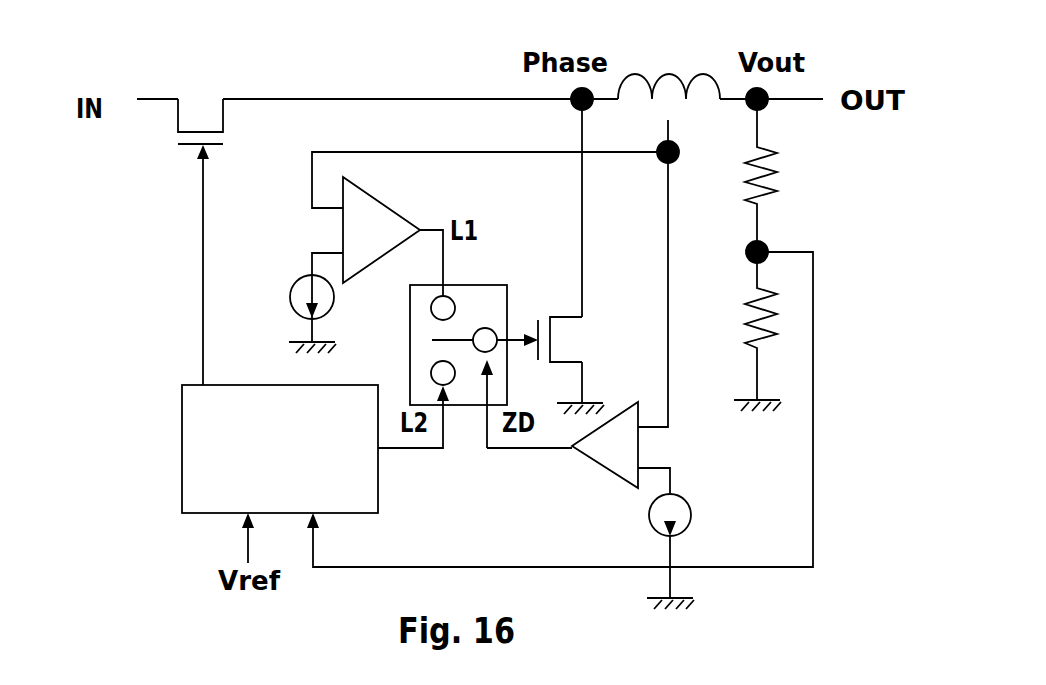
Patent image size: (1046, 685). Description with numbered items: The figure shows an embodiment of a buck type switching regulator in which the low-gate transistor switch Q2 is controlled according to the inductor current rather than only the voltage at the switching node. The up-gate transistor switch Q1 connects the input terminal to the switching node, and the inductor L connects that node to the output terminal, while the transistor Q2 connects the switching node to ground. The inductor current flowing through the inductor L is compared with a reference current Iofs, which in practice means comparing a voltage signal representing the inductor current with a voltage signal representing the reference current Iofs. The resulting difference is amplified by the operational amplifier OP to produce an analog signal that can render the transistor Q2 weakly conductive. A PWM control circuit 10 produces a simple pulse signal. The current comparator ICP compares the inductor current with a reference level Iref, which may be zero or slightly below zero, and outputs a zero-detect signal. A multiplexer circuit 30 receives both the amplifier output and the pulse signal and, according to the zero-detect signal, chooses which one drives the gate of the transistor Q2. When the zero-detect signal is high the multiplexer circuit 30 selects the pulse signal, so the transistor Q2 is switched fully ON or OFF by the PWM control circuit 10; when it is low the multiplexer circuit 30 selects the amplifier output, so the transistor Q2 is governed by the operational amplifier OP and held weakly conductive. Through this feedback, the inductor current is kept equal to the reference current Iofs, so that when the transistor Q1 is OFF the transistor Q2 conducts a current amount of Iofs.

The PWM control circuit 10 is at (298, 483).
The multiplexer circuit 30 is at (507, 296).
The up-gate transistor switch Q1 is at (200, 225).
The low-gate transistor switch Q2 is at (580, 339).
The inductor L is at (669, 66).
The operational amplifier OP is at (398, 245).
The current comparator ICP is at (633, 460).
The reference current Iofs is at (287, 297).
The reference level Iref is at (695, 515).